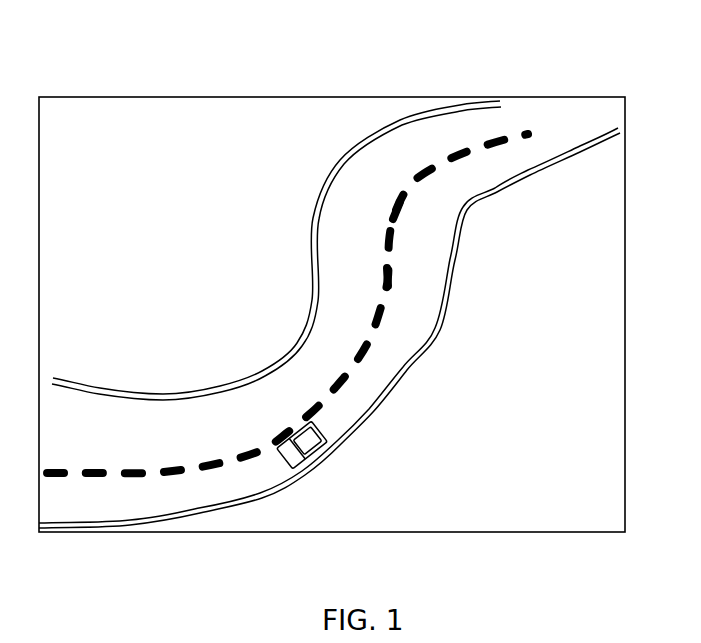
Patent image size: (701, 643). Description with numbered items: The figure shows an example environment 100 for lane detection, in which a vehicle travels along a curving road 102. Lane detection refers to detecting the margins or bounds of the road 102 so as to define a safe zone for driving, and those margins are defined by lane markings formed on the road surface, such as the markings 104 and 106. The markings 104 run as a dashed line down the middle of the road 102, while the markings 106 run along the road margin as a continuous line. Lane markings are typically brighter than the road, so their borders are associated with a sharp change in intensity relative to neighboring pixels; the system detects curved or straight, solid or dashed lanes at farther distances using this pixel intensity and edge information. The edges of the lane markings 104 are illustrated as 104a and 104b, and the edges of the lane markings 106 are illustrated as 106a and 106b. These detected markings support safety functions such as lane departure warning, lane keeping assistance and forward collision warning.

The environment 100 is at (223, 552).
The road 102 is at (574, 136).
The lane markings 104 is at (285, 303).
The edge of lane marking 104a is at (388, 276).
The edge of lane marking 104b is at (396, 212).
The lane markings 106 is at (329, 328).
The edge of lane marking 106a is at (481, 199).
The edge of lane marking 106b is at (481, 207).